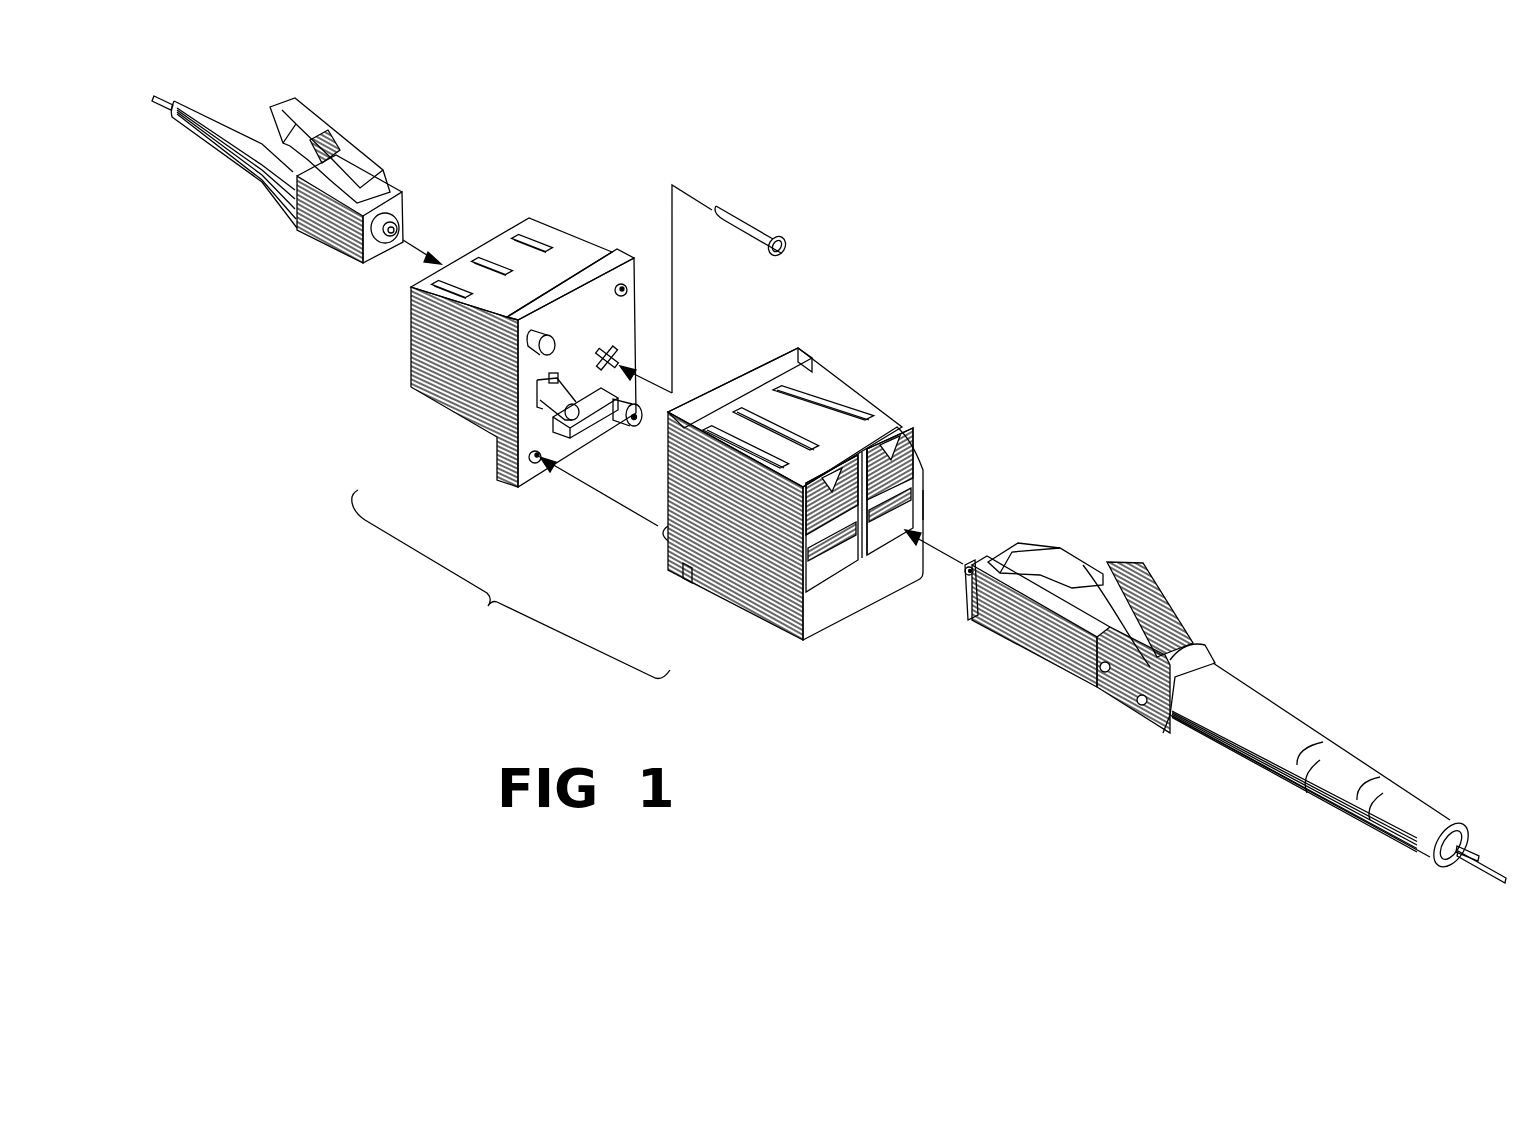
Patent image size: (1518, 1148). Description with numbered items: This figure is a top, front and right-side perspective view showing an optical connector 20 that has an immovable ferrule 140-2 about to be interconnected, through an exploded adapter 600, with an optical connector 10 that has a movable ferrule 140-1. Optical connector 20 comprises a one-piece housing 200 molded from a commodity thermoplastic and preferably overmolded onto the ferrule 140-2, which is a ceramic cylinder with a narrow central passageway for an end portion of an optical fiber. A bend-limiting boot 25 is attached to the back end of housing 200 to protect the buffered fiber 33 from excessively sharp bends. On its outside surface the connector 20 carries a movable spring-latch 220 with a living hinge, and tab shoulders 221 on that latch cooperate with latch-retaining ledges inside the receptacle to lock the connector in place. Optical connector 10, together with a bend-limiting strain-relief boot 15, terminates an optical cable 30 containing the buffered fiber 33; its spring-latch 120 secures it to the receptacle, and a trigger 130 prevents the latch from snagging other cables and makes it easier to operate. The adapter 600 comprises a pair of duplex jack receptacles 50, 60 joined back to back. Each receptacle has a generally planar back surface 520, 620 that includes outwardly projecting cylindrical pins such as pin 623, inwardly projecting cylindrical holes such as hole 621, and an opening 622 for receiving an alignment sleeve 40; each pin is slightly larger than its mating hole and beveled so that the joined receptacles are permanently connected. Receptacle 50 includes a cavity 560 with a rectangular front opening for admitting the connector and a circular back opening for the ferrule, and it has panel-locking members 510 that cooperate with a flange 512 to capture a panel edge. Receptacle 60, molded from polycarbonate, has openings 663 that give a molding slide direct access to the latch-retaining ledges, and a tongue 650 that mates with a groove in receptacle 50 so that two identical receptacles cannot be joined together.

The optical connector 10 is at (1185, 717).
The bend-limiting strain-relief boot 15 is at (1277, 717).
The optical connector 20 is at (306, 198).
The bend-limiting boot 25 is at (218, 140).
The optical cable 30 is at (1467, 860).
The buffered fiber 33 is at (168, 96).
The alignment sleeve 40 is at (757, 220).
The duplex jack receptacle 50 is at (787, 471).
The duplex jack receptacle 60 is at (537, 355).
The spring-latch 120 is at (1097, 572).
The trigger 130 is at (1157, 593).
The movable ferrule 140-1 is at (963, 569).
The immovable ferrule 140-2 is at (392, 240).
The housing 200 is at (325, 232).
The movable spring-latch 220 is at (341, 146).
The tab shoulders 221 is at (316, 134).
The panel-locking members 510 is at (797, 392).
The flange 512 is at (750, 375).
The back surface 520 is at (663, 535).
The cavity 560 is at (927, 503).
The adapter 600 is at (675, 422).
The back surface 620 is at (538, 463).
The cylindrical hole 621 is at (627, 288).
The opening 622 is at (619, 352).
The cylindrical pin 623 is at (639, 422).
The tongue 650 is at (588, 420).
The openings 663 is at (492, 273).